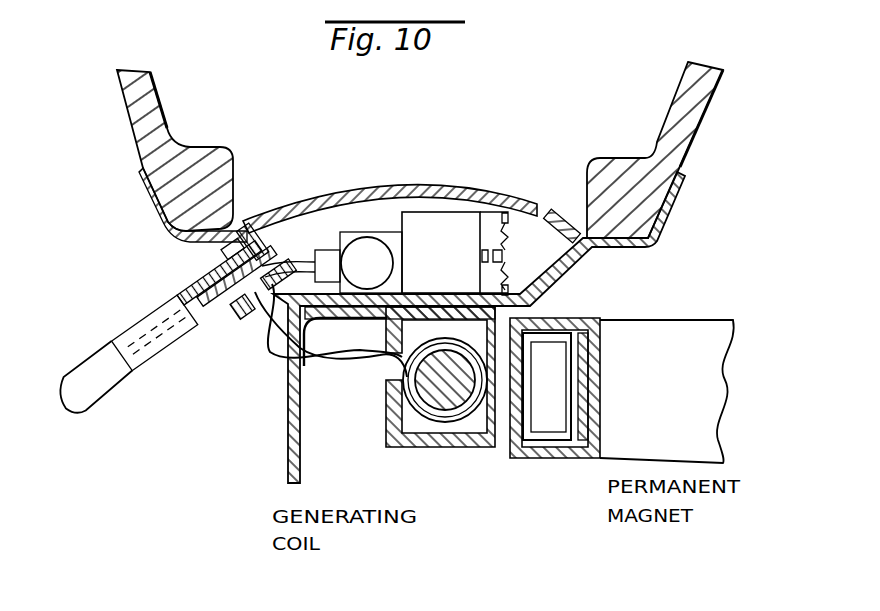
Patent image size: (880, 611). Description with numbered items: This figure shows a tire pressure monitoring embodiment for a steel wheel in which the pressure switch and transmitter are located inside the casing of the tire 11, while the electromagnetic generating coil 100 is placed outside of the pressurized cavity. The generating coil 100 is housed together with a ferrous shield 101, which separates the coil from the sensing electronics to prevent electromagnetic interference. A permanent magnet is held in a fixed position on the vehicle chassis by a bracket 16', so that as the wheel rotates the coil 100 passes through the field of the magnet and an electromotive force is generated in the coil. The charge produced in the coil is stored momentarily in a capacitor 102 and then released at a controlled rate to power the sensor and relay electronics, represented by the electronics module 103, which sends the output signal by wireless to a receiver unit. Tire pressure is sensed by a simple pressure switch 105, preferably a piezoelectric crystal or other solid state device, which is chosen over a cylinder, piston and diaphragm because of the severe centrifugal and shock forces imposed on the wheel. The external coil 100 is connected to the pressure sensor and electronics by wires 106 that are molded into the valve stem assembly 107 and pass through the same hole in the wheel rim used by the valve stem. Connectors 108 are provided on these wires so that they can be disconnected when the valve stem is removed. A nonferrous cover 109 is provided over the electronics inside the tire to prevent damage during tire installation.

The tire 11 is at (140, 126).
The valve stem assembly 107 is at (188, 293).
The connectors 108 is at (327, 254).
The capacitor 102 is at (366, 241).
The nonferrous cover 109 is at (422, 182).
The circuit module 103 is at (453, 255).
The pressure switch 105 is at (506, 247).
The wires 106 is at (331, 355).
The electromagnetic generating coil 100 is at (423, 420).
The ferrous shield 101 is at (472, 437).
The bracket 16' is at (676, 368).